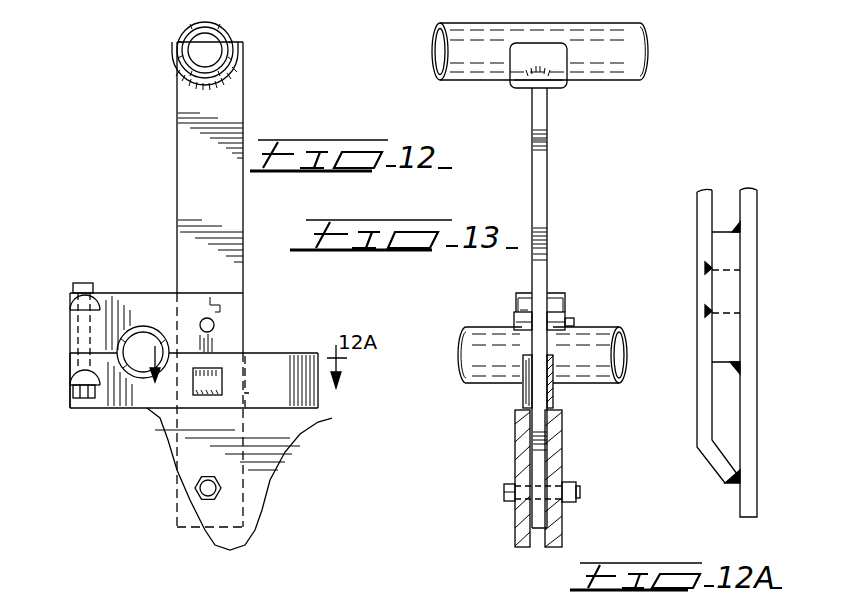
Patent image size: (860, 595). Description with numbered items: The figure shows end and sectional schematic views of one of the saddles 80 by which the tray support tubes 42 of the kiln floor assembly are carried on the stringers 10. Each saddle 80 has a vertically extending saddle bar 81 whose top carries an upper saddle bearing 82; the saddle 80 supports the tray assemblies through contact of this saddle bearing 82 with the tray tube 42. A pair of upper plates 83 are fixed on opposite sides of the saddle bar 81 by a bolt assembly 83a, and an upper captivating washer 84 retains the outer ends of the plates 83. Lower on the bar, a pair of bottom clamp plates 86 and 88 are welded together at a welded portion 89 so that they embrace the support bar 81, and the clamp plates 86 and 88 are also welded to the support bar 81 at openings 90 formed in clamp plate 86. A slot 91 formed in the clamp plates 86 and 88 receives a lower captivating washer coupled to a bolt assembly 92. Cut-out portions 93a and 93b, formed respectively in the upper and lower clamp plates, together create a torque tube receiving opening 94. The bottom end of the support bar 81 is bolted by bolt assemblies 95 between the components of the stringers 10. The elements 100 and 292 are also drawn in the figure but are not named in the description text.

In FIG. 12, the stringer 10 is at (266, 453).
In FIG. 13, the stringer 10 is at (562, 528).
In FIG. 12, the tray support tube 42 is at (214, 22).
In FIG. 13, the tray support tube 42 is at (566, 48).
In FIG. 12, the saddle 80 is at (250, 101).
In FIG. 13, the saddle 80 is at (551, 172).
In FIG. 12, the saddle bar 81 is at (210, 258).
In FIG. 13, the saddle bar 81 is at (534, 140).
In FIG. 12A, the saddle bar 81 is at (736, 258).
In FIG. 12, the upper saddle bearing 82 is at (172, 65).
In FIG. 13, the upper saddle bearing 82 is at (520, 68).
In FIG. 12, the upper plate 83 is at (108, 292).
In FIG. 13, the upper plate 83 is at (514, 312).
In FIG. 12, the bolt assembly 83a is at (214, 326).
In FIG. 13, the bolt assembly 83a is at (574, 320).
In FIG. 12, the upper captivating washer 84 is at (80, 292).
In FIG. 12, the bottom clamp plate 86 is at (126, 410).
In FIG. 13, the bottom clamp plate 86 is at (522, 398).
In FIG. 12A, the bottom clamp plate 86 is at (700, 426).
In FIG. 13, the bottom clamp plate 88 is at (552, 392).
In FIG. 12A, the bottom clamp plate 88 is at (748, 400).
In FIG. 12, the welded portion 89 is at (312, 384).
In FIG. 12A, the welded portion 89 is at (732, 492).
In FIG. 12, the opening 90 is at (200, 396).
In FIG. 12, the slot 91 is at (68, 399).
In FIG. 12, the bolt assembly 92 is at (74, 377).
In FIG. 12, the cut-out portion 93a is at (146, 325).
In FIG. 12, the cut-out portion 93b is at (122, 392).
In FIG. 12, the torque tube receiving opening 94 is at (118, 342).
In FIG. 12, the bolt assembly 95 is at (206, 502).
In FIG. 13, the bolt assembly 95 is at (580, 492).
In FIG. 12, the cross tube 100 is at (118, 354).
In FIG. 13, the cross tube 100 is at (622, 362).
In FIG. 12, the bolt 292 is at (238, 546).
In FIG. 13, the bolt 292 is at (504, 500).